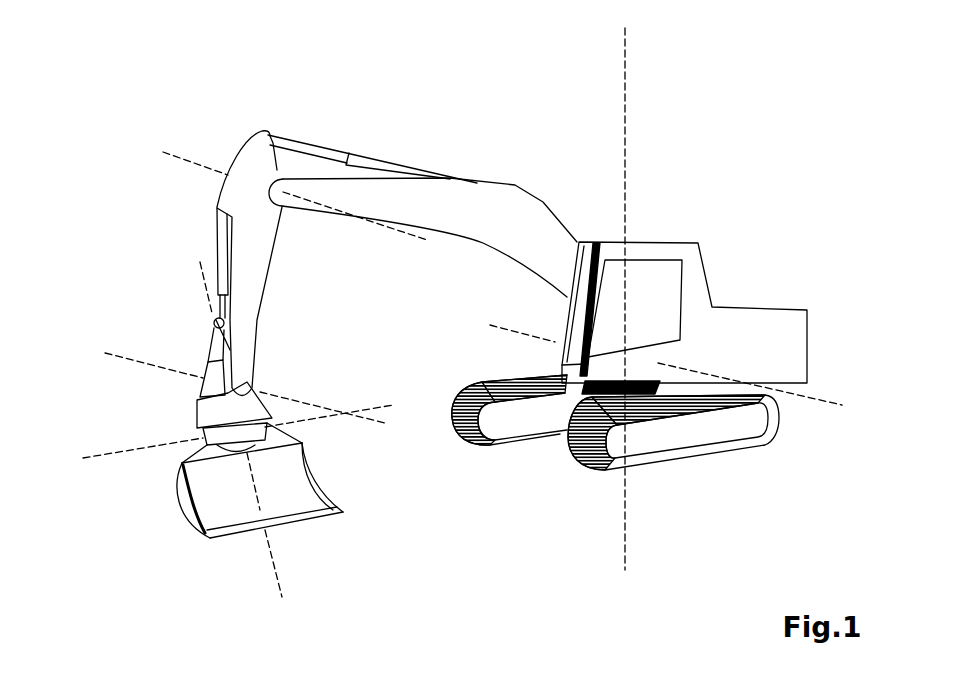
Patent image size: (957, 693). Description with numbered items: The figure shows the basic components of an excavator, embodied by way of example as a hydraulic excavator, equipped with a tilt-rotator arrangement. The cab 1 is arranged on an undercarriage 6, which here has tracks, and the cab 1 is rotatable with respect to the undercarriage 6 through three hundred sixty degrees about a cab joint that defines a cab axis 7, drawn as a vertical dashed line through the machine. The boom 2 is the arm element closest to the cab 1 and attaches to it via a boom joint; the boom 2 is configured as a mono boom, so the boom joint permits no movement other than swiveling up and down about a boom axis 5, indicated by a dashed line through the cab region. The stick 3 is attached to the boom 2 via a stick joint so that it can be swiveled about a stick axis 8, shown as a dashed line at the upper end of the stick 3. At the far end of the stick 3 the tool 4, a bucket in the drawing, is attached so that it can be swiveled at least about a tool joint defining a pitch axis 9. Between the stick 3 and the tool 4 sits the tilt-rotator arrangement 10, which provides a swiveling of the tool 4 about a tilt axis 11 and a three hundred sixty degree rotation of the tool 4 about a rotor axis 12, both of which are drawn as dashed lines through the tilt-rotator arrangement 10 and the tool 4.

The cab 1 is at (688, 272).
The boom 2 is at (437, 202).
The stick 3 is at (253, 247).
The tool 4 is at (212, 495).
The boom axis 5 is at (812, 398).
The undercarriage 6 is at (685, 432).
The cab axis 7 is at (625, 82).
The stick axis 8 is at (197, 160).
The pitch axis 9 is at (132, 353).
The tilt-rotator arrangement 10 is at (247, 412).
The tilt axis 11 is at (125, 447).
The rotor axis 12 is at (280, 583).